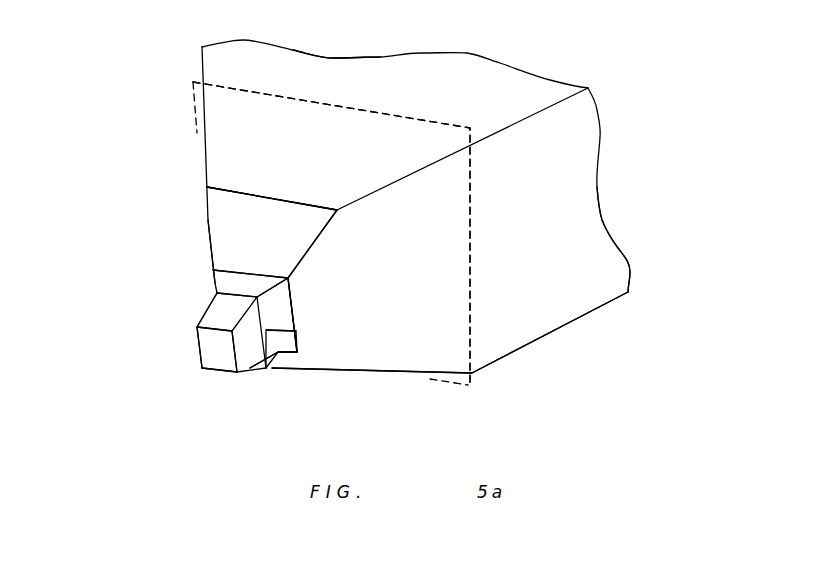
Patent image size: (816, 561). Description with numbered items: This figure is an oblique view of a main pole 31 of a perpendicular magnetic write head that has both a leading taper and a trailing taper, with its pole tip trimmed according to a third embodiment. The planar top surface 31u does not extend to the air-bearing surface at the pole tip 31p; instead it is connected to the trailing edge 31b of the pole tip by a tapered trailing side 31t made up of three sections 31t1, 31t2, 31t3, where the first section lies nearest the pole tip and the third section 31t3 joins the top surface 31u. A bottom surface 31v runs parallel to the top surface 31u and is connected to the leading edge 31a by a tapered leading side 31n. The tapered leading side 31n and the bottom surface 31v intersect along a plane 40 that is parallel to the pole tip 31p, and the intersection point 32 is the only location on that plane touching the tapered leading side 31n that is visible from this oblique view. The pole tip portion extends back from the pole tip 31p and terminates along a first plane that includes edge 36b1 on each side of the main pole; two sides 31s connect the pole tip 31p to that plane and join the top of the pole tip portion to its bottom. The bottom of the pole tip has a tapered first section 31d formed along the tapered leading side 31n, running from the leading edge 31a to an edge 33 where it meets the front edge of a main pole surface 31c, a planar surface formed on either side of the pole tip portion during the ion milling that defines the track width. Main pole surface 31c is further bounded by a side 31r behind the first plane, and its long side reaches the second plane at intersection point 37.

The main pole 31 is at (555, 312).
The planar top surface 31u is at (343, 72).
The bottom surface 31v is at (602, 307).
The tapered leading side 31n is at (390, 373).
The intersection point 32 is at (480, 375).
The plane 40 is at (345, 246).
The tapered trailing side 31t is at (108, 217).
The first section of trailing tapered side 31t1 is at (222, 310).
The second section of trailing tapered side 31t2 is at (222, 283).
The third section of trailing tapered side 31t3 is at (222, 224).
The trailing edge 31b is at (198, 324).
The sides 31s is at (198, 349).
The leading edge 31a is at (202, 373).
The pole tip 31p is at (213, 361).
The first section of pole tip bottom surface 31d is at (241, 374).
The edge 33 is at (265, 350).
The main pole surface 31c is at (273, 360).
The intersection point 37 is at (290, 296).
The edge 36b1 is at (295, 330).
The side 31r is at (290, 343).